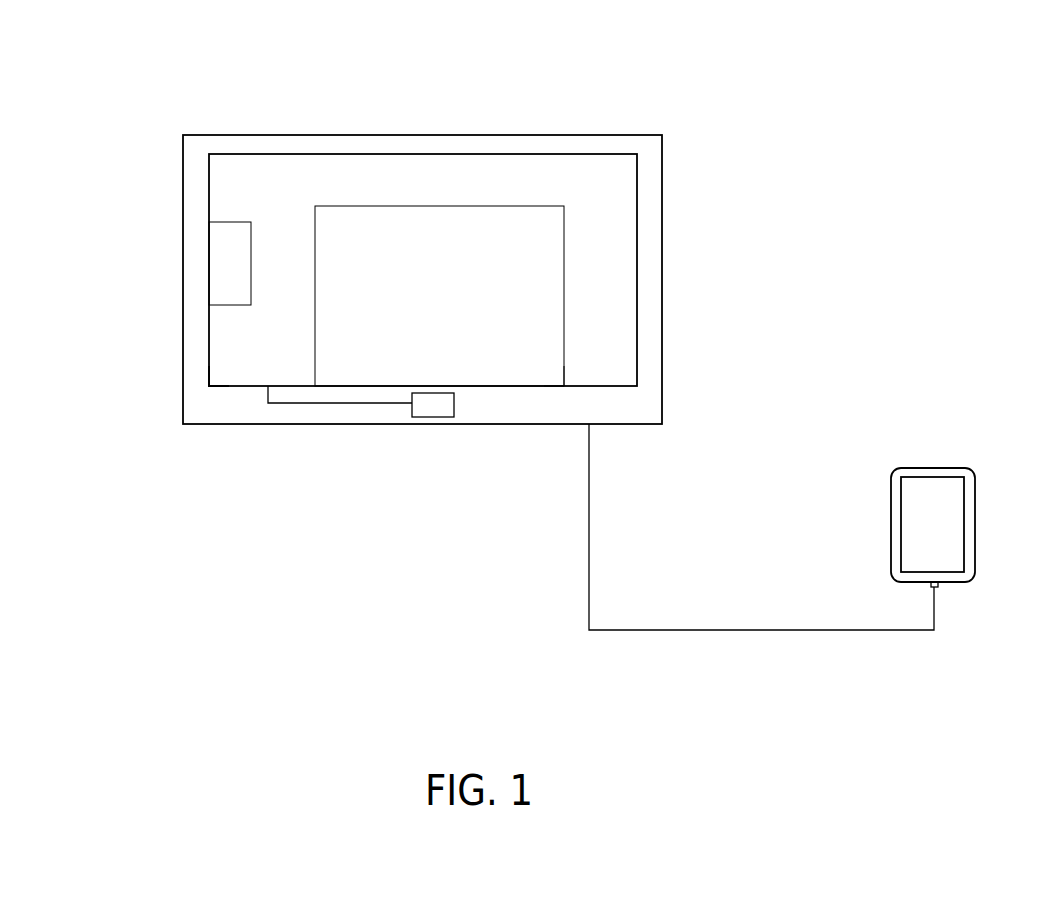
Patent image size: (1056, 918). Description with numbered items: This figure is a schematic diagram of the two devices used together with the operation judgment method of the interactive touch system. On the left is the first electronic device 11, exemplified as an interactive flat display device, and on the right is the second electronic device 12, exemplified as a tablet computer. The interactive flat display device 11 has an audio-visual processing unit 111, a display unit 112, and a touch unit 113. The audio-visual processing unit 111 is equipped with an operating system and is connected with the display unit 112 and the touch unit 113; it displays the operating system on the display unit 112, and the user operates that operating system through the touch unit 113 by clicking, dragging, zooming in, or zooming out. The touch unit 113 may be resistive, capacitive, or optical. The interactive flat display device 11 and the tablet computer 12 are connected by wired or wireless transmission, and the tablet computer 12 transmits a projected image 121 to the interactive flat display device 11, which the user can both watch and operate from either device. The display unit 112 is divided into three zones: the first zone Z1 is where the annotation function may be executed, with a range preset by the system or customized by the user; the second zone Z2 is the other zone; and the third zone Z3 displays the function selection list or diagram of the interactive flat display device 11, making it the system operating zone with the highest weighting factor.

The first electronic device 11 is at (211, 103).
The second electronic device 12 is at (961, 450).
The audio-visual processing unit 111 is at (430, 417).
The display unit 112 is at (239, 364).
The touch unit 113 is at (574, 389).
The projected image 121 is at (692, 617).
The first zone Z1 is at (548, 330).
The second zone Z2 is at (633, 177).
The third zone Z3 is at (222, 255).